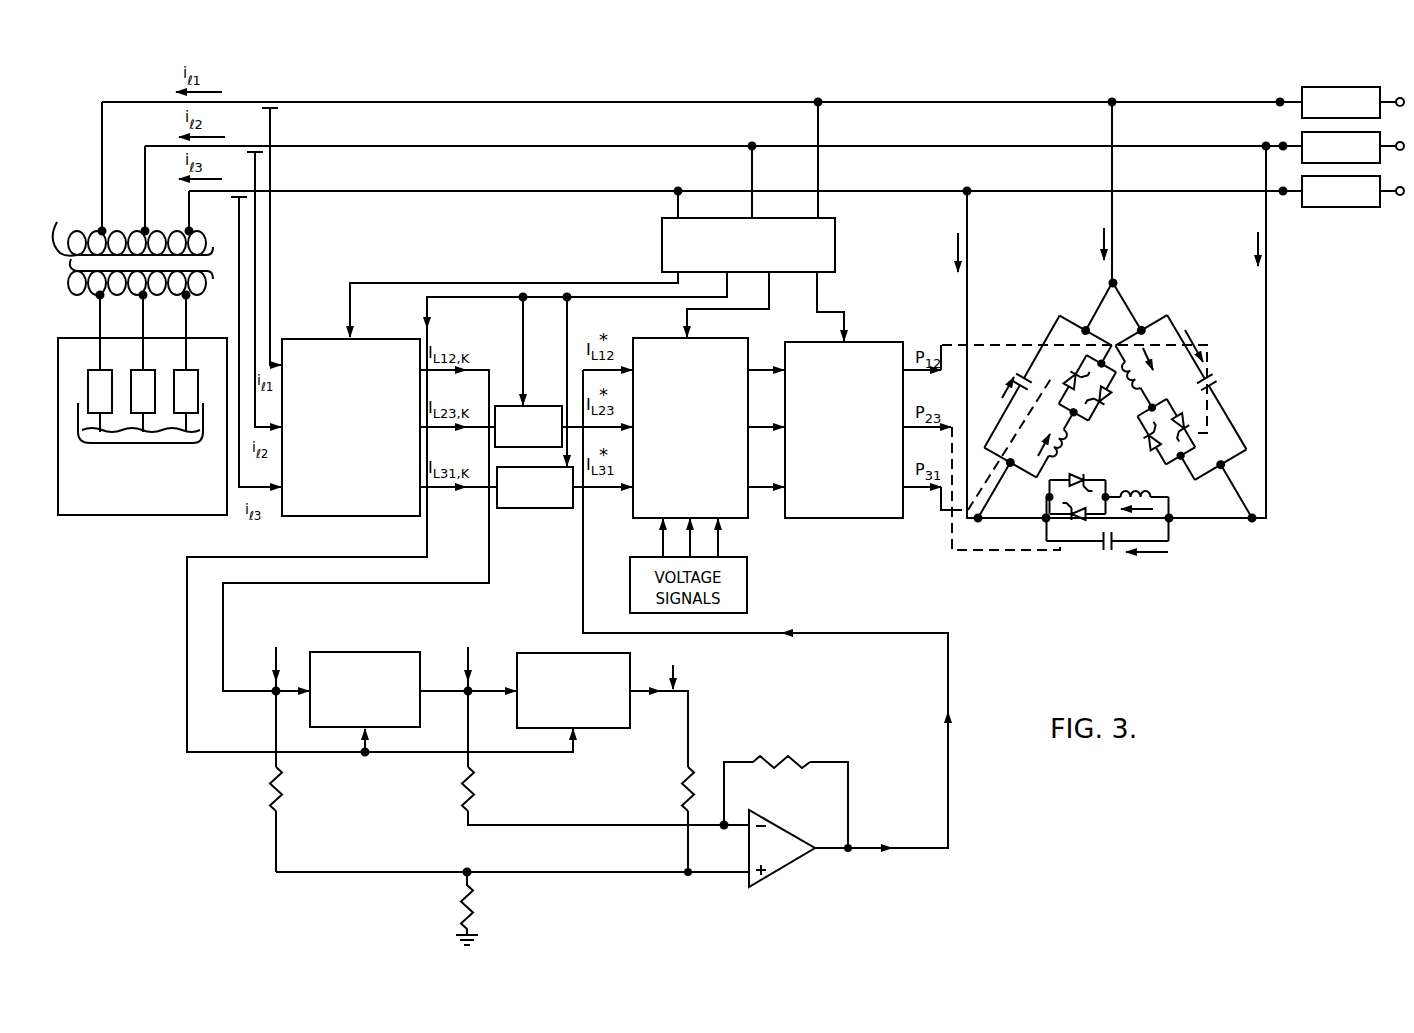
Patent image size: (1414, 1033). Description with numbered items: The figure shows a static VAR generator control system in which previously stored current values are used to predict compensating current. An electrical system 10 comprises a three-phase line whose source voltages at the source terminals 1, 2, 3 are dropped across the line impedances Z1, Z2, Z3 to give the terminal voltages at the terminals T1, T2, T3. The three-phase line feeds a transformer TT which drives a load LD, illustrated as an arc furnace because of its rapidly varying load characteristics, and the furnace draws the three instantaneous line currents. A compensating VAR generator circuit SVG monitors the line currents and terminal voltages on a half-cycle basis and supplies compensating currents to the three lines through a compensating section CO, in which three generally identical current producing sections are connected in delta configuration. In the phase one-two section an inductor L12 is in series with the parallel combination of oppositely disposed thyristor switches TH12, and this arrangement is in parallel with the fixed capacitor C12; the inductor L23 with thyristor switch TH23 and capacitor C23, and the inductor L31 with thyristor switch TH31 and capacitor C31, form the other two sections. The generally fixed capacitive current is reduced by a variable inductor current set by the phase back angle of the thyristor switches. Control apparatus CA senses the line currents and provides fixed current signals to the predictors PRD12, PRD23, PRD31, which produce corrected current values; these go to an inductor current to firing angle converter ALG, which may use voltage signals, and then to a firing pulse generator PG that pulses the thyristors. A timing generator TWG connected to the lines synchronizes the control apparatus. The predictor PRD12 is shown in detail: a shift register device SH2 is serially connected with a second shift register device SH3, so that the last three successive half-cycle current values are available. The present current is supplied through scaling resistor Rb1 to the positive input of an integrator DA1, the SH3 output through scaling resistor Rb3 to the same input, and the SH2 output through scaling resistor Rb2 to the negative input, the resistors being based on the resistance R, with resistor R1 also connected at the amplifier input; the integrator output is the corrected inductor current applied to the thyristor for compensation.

The electrical system 10 is at (1000, 89).
The terminal of line 1 T1 is at (1254, 78).
The terminal of line 2 T2 is at (1286, 149).
The terminal of line 3 T3 is at (1268, 170).
The line impedance Z1 is at (1349, 102).
The line impedance Z2 is at (1349, 147).
The line impedance Z3 is at (1349, 191).
The source terminal of phase 1 is at (1390, 78).
The source terminal of phase 2 is at (1390, 122).
The source terminal of phase 3 is at (1390, 167).
The transformer TT is at (133, 250).
The load LD is at (156, 515).
The control apparatus CA is at (358, 516).
The timing generator TWG is at (662, 240).
The compensating VAR generator circuit SVG is at (808, 334).
The inductor current to firing angle converter ALG is at (789, 549).
The firing pulse generator PG is at (840, 518).
The predictor PRD23 is at (528, 426).
The predictor PRD31 is at (535, 487).
The predictor PRD12 is at (594, 657).
The shift register device SH2 is at (365, 689).
The shift register device SH3 is at (573, 690).
The integrator DA1 is at (782, 848).
The resistor R is at (786, 756).
The resistor R1 is at (475, 910).
The scaling resistor R/b1 Rb1 is at (284, 796).
The scaling resistor R/b2 Rb2 is at (476, 796).
The scaling resistor R/b3 Rb3 is at (683, 776).
The compensating section CO is at (1096, 342).
The fixed capacitor C31 is at (1021, 378).
The fixed capacitor C12 is at (1214, 390).
The fixed capacitor C23 is at (1112, 552).
The thyristor switch TH31 is at (1136, 434).
The thyristor switch TH12 is at (1198, 404).
The thyristor switch TH23 is at (1104, 542).
The inductor L31 is at (1056, 458).
The inductor L12 is at (1126, 385).
The inductor L23 is at (1150, 483).